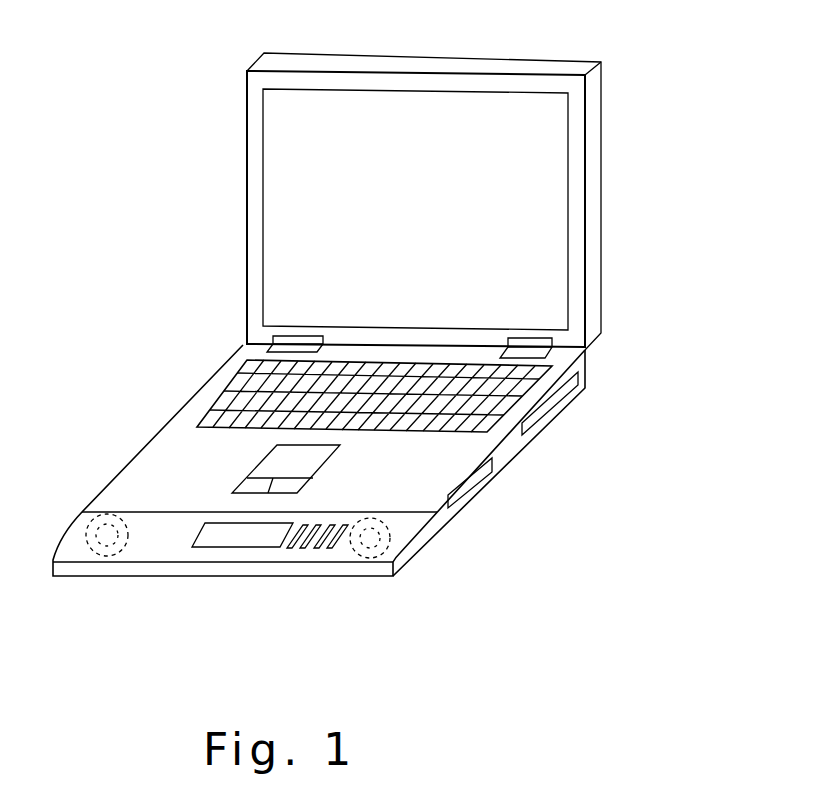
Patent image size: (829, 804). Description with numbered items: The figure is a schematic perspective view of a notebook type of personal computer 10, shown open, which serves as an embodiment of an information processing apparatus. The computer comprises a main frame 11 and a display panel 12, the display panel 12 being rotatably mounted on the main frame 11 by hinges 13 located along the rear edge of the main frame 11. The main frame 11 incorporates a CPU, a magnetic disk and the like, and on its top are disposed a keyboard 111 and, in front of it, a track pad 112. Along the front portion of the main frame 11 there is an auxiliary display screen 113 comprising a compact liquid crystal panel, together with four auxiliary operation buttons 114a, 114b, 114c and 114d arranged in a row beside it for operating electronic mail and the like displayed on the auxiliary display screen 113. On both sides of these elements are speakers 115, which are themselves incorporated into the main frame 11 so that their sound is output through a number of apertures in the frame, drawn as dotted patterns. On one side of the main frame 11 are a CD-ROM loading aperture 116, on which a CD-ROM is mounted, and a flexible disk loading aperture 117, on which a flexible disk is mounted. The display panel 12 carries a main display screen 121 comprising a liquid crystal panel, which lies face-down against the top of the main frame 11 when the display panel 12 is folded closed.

The personal computer 10 is at (630, 68).
The main frame 11 is at (130, 475).
The display panel 12 is at (598, 129).
The hinges 13 is at (302, 336).
The keyboard 111 is at (220, 400).
The track pad 112 is at (273, 462).
The auxiliary display screen 113 is at (222, 538).
The auxiliary operation button 114a is at (290, 548).
The auxiliary operation button 114b is at (300, 548).
The auxiliary operation button 114c is at (313, 548).
The auxiliary operation button 114d is at (327, 548).
The speakers 115 is at (100, 543).
The CD-ROM loading aperture 116 is at (547, 408).
The flexible disk loading aperture 117 is at (468, 487).
The main display screen 121 is at (296, 163).